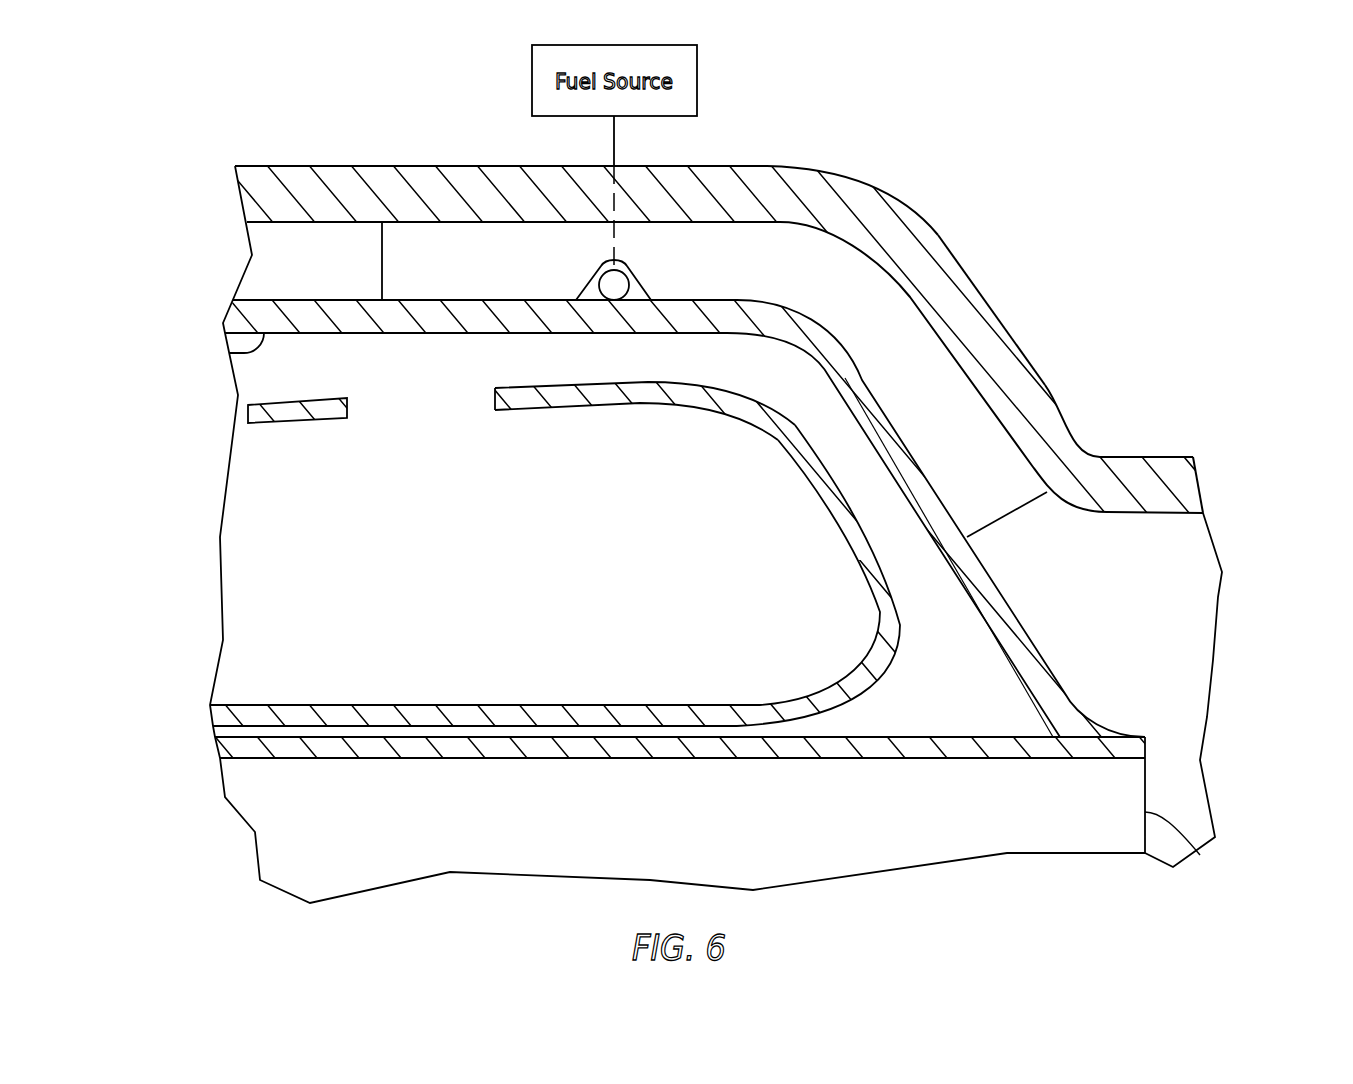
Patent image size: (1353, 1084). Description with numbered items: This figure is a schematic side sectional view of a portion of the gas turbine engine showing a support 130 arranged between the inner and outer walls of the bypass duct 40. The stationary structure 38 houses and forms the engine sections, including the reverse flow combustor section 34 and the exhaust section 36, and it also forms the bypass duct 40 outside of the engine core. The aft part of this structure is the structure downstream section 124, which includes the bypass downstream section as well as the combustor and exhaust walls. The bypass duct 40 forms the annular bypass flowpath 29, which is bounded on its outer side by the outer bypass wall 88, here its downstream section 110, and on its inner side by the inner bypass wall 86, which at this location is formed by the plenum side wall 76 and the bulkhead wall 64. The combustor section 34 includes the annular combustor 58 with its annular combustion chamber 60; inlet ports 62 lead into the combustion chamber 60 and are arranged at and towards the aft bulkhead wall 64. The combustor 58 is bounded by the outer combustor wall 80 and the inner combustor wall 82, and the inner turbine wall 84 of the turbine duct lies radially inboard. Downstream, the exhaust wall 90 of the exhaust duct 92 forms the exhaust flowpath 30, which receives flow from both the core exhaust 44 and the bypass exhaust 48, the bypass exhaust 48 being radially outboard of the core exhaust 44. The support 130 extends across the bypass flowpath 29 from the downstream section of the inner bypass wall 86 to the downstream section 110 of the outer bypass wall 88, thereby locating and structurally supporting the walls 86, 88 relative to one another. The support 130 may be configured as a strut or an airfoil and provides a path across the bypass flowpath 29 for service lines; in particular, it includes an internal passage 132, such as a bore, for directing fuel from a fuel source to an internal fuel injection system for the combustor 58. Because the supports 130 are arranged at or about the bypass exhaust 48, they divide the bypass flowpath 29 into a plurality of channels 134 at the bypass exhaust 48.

The bypass flowpath 29 is at (275, 257).
The exhaust flowpath 30 is at (1178, 758).
The combustor section 34 is at (220, 400).
The exhaust section 36 is at (1192, 433).
The stationary structure 38 is at (676, 542).
The bypass duct 40 is at (1022, 322).
The core exhaust 44 is at (1195, 845).
The bypass exhaust 48 is at (1143, 625).
The combustor 58 is at (399, 742).
The combustion chamber 60 is at (497, 603).
The inlet ports 62 is at (423, 406).
The bulkhead wall 64 is at (857, 537).
The plenum side wall 76 is at (515, 333).
The outer combustor wall 80 is at (632, 410).
The inner combustor wall 82 is at (575, 703).
The inner turbine wall 84 is at (560, 758).
The inner bypass wall 86 is at (228, 352).
The outer bypass wall 88 is at (507, 149).
The exhaust wall 90 is at (1192, 487).
The exhaust duct 92 is at (1192, 433).
The downstream section of the outer bypass wall 110 is at (330, 164).
The structure downstream section 124 is at (676, 542).
The support 130 is at (1010, 527).
The internal passage 132 is at (618, 241).
The channels 134 is at (943, 420).